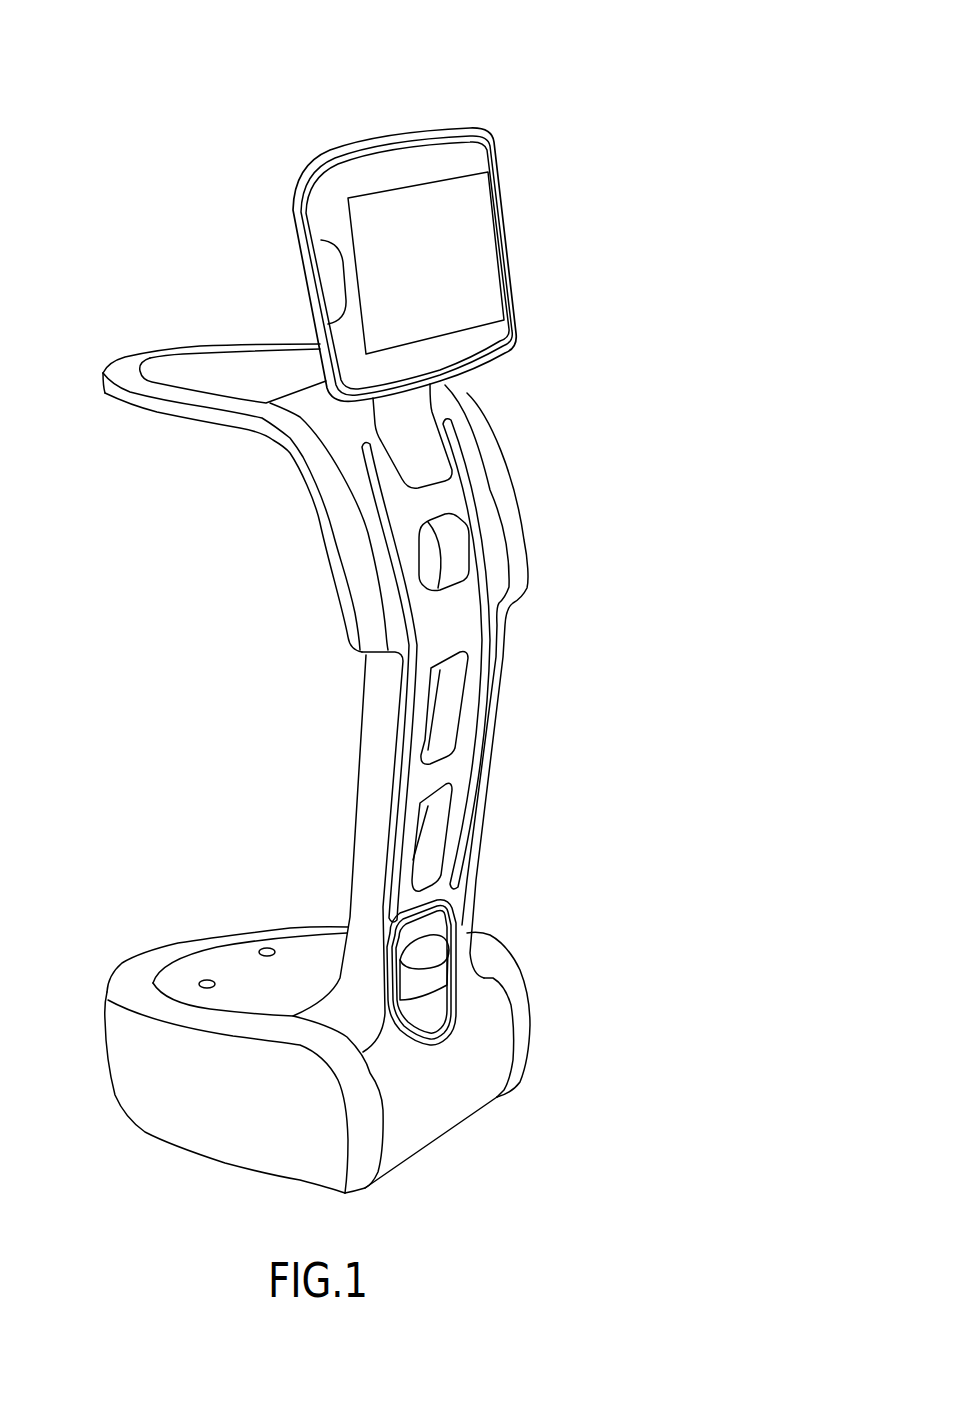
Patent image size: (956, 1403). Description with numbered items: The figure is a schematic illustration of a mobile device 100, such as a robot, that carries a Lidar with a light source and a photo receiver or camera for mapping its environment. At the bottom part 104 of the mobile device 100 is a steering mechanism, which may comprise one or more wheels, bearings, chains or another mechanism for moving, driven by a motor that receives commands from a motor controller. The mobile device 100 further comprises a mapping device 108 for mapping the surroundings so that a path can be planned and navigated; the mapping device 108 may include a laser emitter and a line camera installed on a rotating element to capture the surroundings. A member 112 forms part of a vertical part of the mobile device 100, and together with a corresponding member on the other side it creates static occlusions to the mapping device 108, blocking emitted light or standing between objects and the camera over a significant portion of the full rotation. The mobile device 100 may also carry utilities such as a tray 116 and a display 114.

The mobile device 100 is at (538, 53).
The bottom part 104 is at (207, 937).
The mapping device 108 is at (433, 958).
The member 112 is at (368, 801).
The display 114 is at (470, 234).
The tray 116 is at (219, 384).